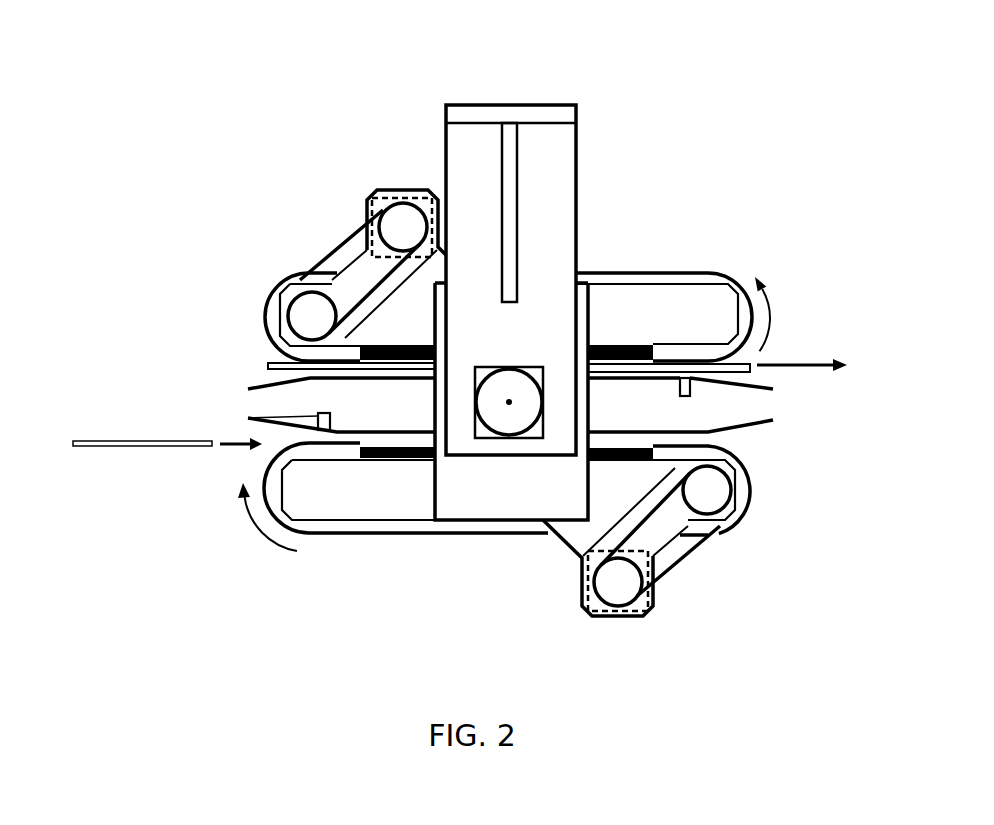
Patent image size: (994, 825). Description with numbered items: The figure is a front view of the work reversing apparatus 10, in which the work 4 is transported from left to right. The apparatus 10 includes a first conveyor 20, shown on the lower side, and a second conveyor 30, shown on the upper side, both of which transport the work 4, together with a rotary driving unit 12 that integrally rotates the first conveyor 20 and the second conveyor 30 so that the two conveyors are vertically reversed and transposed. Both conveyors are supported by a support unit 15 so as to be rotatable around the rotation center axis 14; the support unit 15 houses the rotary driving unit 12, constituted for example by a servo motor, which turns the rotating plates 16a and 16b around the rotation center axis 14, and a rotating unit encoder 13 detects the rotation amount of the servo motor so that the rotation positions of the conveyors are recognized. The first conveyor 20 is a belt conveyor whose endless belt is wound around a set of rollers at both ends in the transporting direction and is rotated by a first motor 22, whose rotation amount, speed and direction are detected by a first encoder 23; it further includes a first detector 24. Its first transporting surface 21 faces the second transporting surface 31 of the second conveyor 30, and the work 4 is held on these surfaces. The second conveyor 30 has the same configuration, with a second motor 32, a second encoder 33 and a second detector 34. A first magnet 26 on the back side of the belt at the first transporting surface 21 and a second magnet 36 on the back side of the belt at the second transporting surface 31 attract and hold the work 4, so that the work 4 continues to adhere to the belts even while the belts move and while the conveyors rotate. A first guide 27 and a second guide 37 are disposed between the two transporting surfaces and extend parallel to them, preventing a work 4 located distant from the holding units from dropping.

The work 4 is at (110, 440).
The work reversing apparatus 10 is at (367, 216).
The rotary driving unit 12 is at (509, 502).
The rotating unit encoder 13 is at (513, 418).
The rotation center axis 14 is at (509, 402).
The support unit 15 is at (543, 110).
The rotating plate 16a is at (353, 508).
The rotating plate 16b is at (703, 295).
The first conveyor 20 is at (662, 589).
The first transporting surface 21 is at (303, 437).
The first motor 22 is at (615, 631).
The first encoder 23 is at (618, 612).
The first detector 24 is at (248, 418).
The first magnet 26 is at (408, 460).
The first guide 27 is at (773, 420).
The second conveyor 30 is at (524, 278).
The second transporting surface 31 is at (270, 362).
The second motor 32 is at (397, 175).
The second encoder 33 is at (405, 198).
The second detector 34 is at (690, 395).
The second magnet 36 is at (626, 345).
The second guide 37 is at (790, 362).